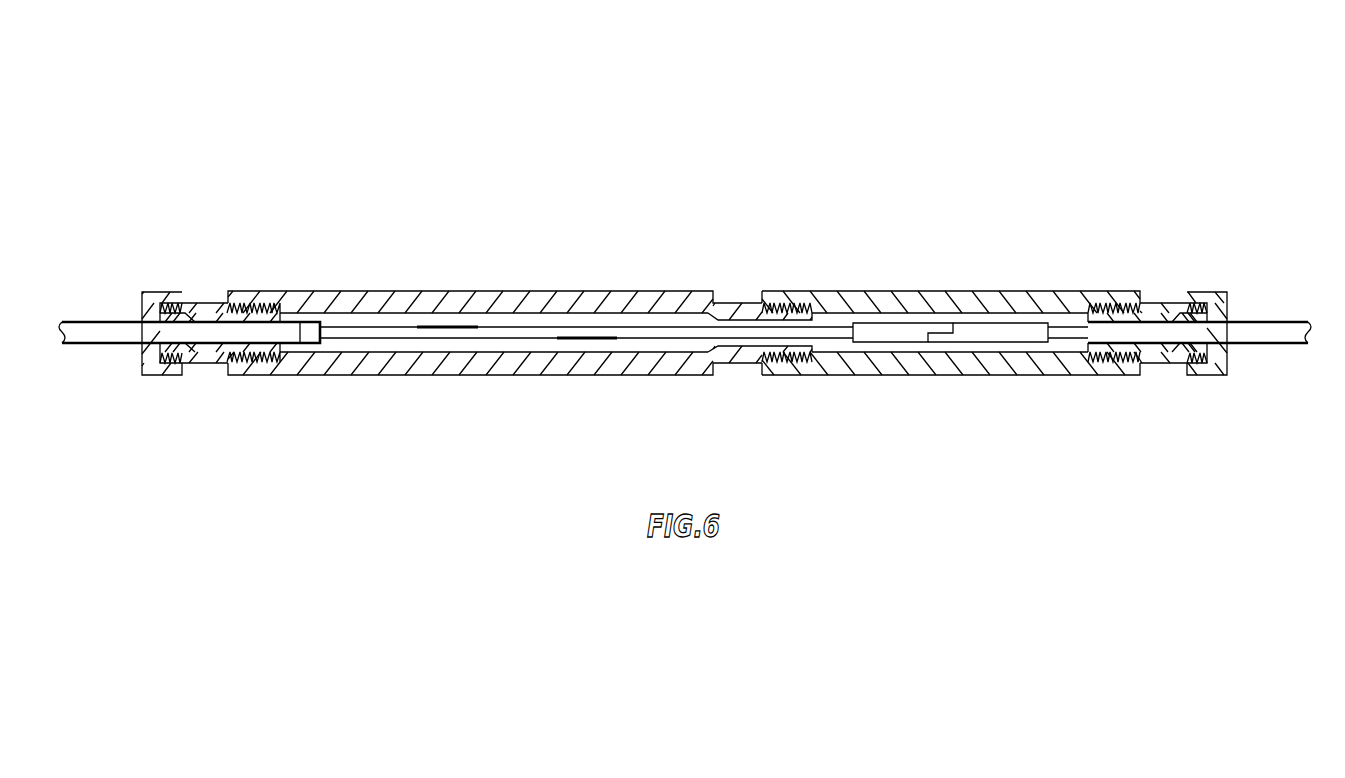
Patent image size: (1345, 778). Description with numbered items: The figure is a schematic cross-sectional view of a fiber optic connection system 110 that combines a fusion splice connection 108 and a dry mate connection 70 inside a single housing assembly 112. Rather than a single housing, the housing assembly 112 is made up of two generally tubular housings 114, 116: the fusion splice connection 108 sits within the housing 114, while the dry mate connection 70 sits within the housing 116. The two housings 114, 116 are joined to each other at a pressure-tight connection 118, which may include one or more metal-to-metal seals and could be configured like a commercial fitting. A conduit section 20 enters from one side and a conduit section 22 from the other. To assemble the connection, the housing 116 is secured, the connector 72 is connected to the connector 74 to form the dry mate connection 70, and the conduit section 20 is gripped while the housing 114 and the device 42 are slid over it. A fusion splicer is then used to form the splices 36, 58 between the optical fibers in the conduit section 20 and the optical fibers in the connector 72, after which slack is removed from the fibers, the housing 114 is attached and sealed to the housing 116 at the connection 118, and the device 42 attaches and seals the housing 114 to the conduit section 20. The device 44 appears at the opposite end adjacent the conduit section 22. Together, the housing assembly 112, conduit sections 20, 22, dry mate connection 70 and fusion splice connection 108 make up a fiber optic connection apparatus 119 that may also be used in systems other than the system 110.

The connection system 110 is at (928, 110).
The conduit section 20 is at (93, 321).
The conduit section 22 is at (1278, 321).
The device 42 is at (209, 302).
The second fitting 44 is at (1172, 302).
The splice 36 is at (440, 325).
The splice 58 is at (585, 336).
The housing assembly 112 is at (698, 289).
The housing 114 is at (475, 376).
The fusion splice connection 108 is at (513, 354).
The fiber optic connection apparatus 119 is at (682, 377).
The pressure-tight connection 118 is at (807, 355).
The housing 116 is at (1060, 376).
The dry mate connection 70 is at (970, 353).
The connector 72 is at (915, 321).
The connector 74 is at (1030, 321).